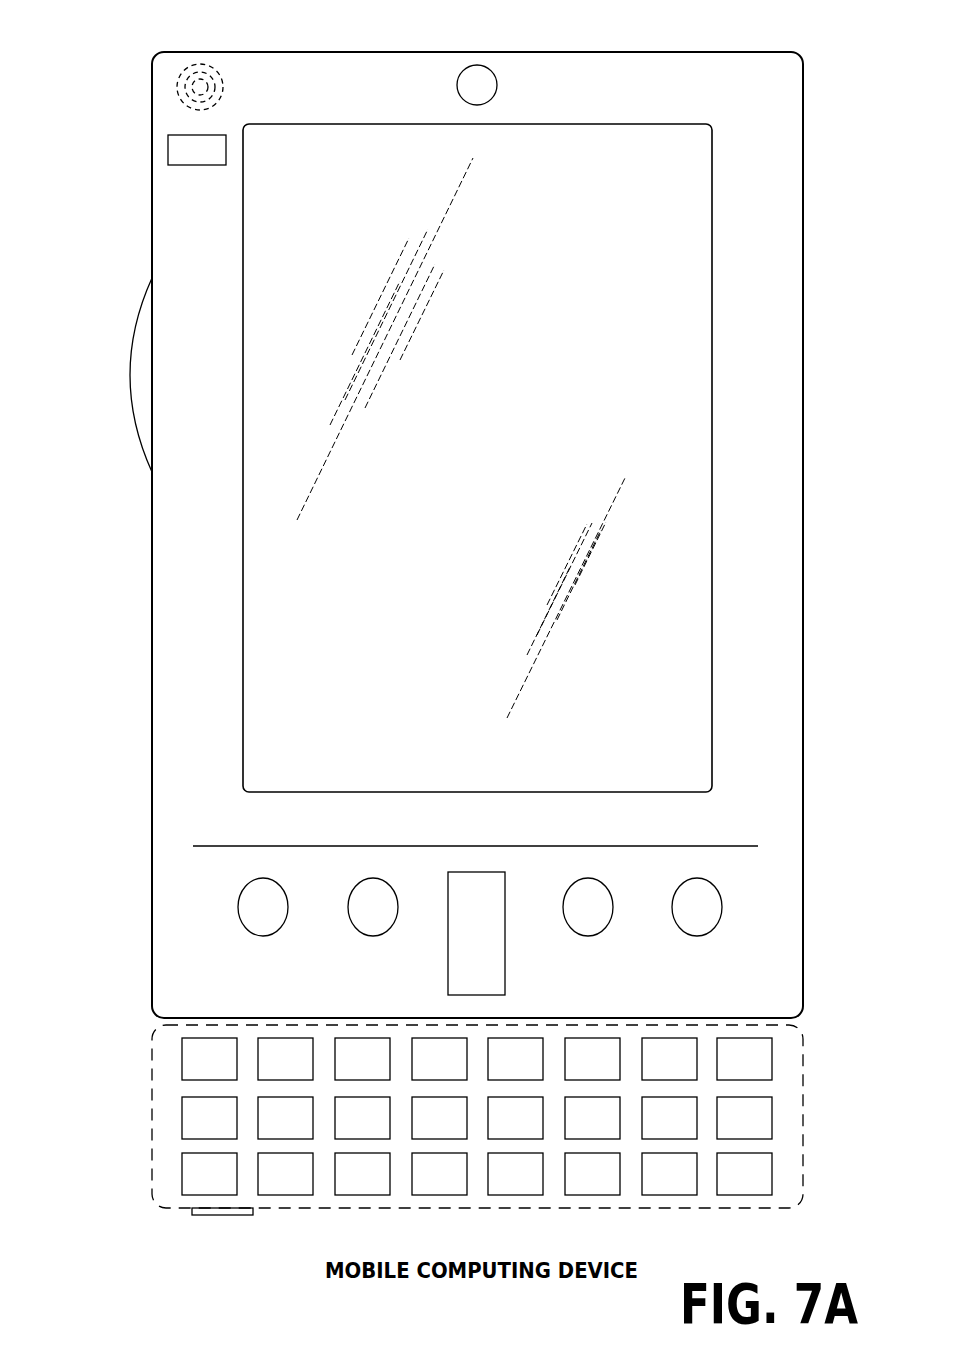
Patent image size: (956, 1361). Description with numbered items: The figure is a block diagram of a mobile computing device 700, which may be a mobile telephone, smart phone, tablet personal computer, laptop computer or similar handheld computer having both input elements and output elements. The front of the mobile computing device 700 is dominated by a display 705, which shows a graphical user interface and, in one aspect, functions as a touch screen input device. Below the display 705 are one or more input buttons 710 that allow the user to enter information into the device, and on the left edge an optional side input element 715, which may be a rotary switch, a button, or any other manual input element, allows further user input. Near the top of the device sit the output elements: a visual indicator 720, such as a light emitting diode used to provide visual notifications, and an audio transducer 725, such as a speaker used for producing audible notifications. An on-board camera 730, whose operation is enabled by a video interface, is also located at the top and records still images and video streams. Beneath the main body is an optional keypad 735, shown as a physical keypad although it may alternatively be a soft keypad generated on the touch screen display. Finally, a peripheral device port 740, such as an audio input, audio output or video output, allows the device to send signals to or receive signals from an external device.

The mobile computing device 700 is at (768, 51).
The display 705 is at (265, 628).
The input buttons 710 is at (263, 936).
The side input element 715 is at (130, 378).
The visual indicator 720 is at (168, 150).
The audio transducer 725 is at (170, 88).
The on-board camera 730 is at (477, 65).
The keypad 735 is at (163, 1115).
The peripheral device port 740 is at (200, 1216).